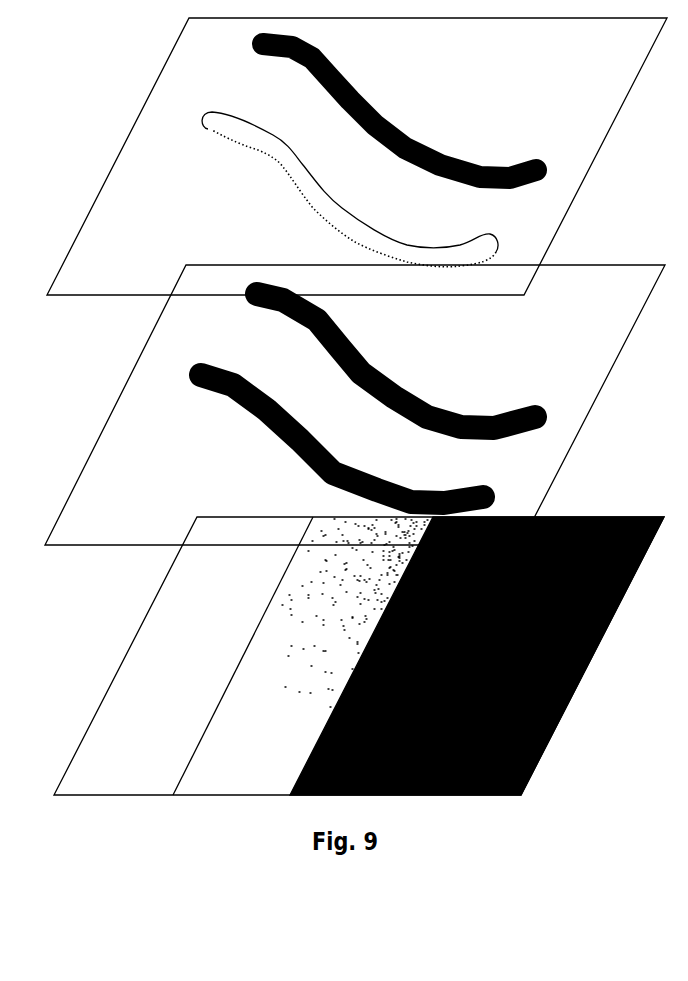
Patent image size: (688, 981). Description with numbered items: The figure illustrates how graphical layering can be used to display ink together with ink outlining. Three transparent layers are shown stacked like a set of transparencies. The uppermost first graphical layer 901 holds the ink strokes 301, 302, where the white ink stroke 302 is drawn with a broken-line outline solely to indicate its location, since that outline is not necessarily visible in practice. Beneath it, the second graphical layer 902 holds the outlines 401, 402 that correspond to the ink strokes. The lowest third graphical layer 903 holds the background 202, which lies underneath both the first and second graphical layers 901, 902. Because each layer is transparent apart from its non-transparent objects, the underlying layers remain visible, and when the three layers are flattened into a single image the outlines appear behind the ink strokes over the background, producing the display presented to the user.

The first graphical layer 901 is at (81, 297).
The second graphical layer 902 is at (78, 547).
The third graphical layer 903 is at (78, 797).
The ink stroke 301 is at (538, 155).
The white ink stroke 302 is at (282, 167).
The outline 401 is at (531, 404).
The outline 402 is at (270, 423).
The background 202 is at (155, 778).